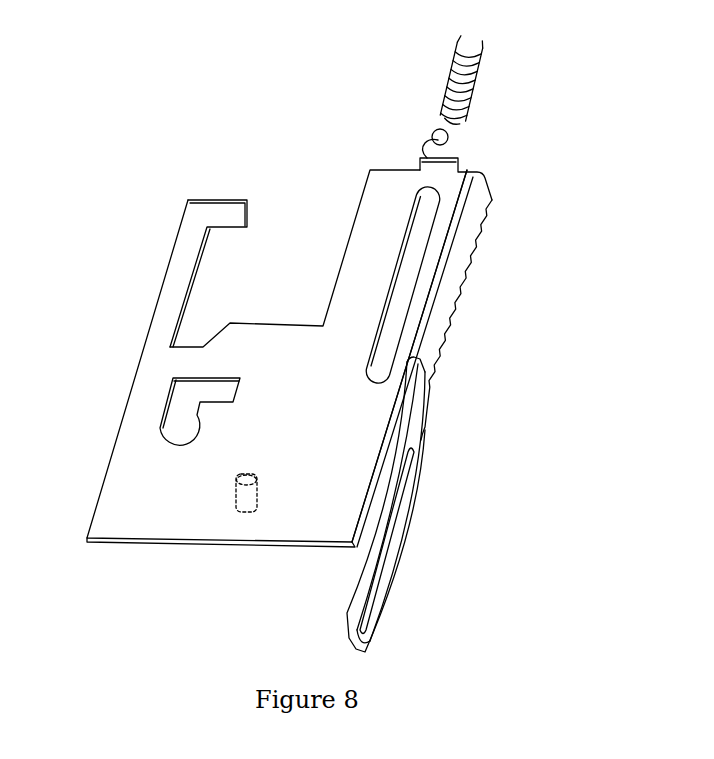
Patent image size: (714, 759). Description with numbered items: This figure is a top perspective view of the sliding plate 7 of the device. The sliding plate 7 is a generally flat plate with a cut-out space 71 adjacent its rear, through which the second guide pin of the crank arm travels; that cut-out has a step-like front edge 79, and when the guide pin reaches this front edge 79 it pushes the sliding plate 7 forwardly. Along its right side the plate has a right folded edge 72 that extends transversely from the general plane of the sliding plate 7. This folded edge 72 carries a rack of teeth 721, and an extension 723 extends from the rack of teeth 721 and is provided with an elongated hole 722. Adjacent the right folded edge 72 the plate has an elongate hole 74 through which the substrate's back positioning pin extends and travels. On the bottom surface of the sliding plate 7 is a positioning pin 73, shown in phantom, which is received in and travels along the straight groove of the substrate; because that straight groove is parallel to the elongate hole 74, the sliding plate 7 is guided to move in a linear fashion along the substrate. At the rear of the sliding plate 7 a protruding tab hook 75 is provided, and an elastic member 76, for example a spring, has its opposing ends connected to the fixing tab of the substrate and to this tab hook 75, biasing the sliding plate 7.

The sliding plate 7 is at (125, 593).
The cut-out space 71 is at (237, 255).
The right folded edge 72 is at (460, 305).
The rack of teeth 721 is at (477, 237).
The elongated hole 722 is at (407, 492).
The extension 723 is at (387, 600).
The positioning pin 73 is at (235, 479).
The elongate hole 74 is at (408, 248).
The protruding tab hook 75 is at (450, 136).
The elastic member 76 is at (485, 62).
The step-like front edge 79 is at (228, 322).